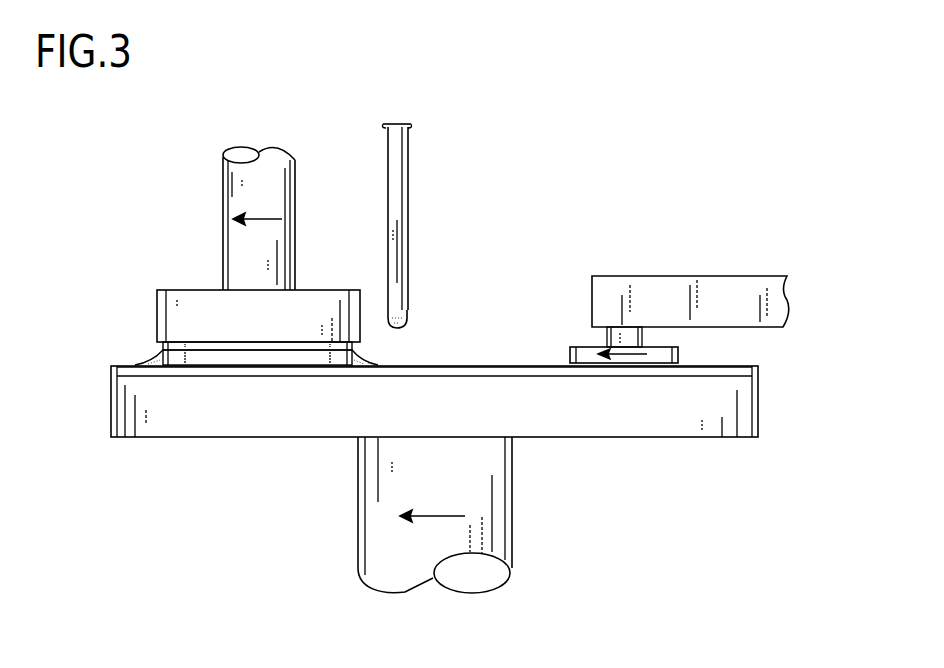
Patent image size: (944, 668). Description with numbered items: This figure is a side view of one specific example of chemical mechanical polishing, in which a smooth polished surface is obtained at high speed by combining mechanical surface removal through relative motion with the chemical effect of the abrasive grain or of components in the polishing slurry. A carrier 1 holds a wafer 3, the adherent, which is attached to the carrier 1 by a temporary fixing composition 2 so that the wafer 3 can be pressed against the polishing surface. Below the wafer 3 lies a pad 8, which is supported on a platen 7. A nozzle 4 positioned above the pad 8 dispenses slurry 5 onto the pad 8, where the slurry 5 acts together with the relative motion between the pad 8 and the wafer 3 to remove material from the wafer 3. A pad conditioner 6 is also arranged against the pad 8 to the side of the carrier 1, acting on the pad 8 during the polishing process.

The carrier 1 is at (163, 302).
The temporary fixing composition 2 is at (167, 347).
The wafer 3 is at (150, 355).
The nozzle 4 is at (400, 173).
The slurry 5 is at (406, 323).
The pad conditioner 6 is at (728, 276).
The platen 7 is at (713, 432).
The pad 8 is at (533, 367).